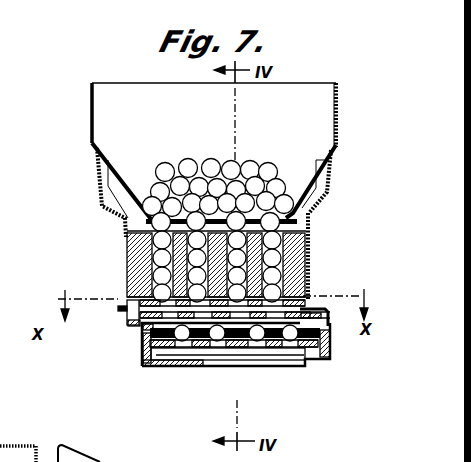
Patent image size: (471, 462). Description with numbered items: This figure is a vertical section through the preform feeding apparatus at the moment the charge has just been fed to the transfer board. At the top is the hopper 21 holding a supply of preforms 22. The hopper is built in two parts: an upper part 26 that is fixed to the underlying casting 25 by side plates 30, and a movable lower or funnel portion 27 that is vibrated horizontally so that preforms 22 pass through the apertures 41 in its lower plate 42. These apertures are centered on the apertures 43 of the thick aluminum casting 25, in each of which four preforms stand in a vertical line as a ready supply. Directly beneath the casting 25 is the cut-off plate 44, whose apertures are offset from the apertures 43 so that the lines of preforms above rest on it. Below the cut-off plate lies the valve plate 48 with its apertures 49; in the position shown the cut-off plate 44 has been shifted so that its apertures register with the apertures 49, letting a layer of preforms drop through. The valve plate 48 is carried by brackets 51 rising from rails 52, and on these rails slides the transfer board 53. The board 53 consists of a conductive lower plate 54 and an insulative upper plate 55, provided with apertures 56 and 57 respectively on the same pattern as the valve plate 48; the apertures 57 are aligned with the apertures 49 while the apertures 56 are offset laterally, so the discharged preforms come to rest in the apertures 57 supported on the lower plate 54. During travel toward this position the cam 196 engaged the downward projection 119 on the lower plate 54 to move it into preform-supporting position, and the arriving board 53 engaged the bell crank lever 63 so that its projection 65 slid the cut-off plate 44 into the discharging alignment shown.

The hopper 21 is at (85, 121).
The preforms 22 is at (210, 163).
The casting 25 is at (203, 261).
The upper part of hopper 26 is at (339, 128).
The lower or funnel portion of hopper 27 is at (329, 178).
The side plates 30 is at (101, 190).
The apertures in lower plate of hopper 41 is at (126, 229).
The lower plate of hopper portion 42 is at (297, 222).
The apertures in casting 43 is at (266, 257).
The cut-off plate 44 is at (326, 294).
The valve plate 48 is at (144, 322).
The apertures in valve plate 49 is at (210, 320).
The brackets 51 is at (331, 356).
The rails 52 is at (326, 364).
The transfer board 53 is at (312, 326).
The lower plate of transfer board 54 is at (288, 348).
The upper plate of transfer board 55 is at (278, 350).
The apertures in lower plate 56 is at (272, 341).
The apertures in upper plate 57 is at (288, 305).
The bell crank lever 63 is at (128, 322).
The projection on lever 65 is at (126, 312).
The downward projection on lower plate 119 is at (285, 357).
The cam 196 is at (178, 367).